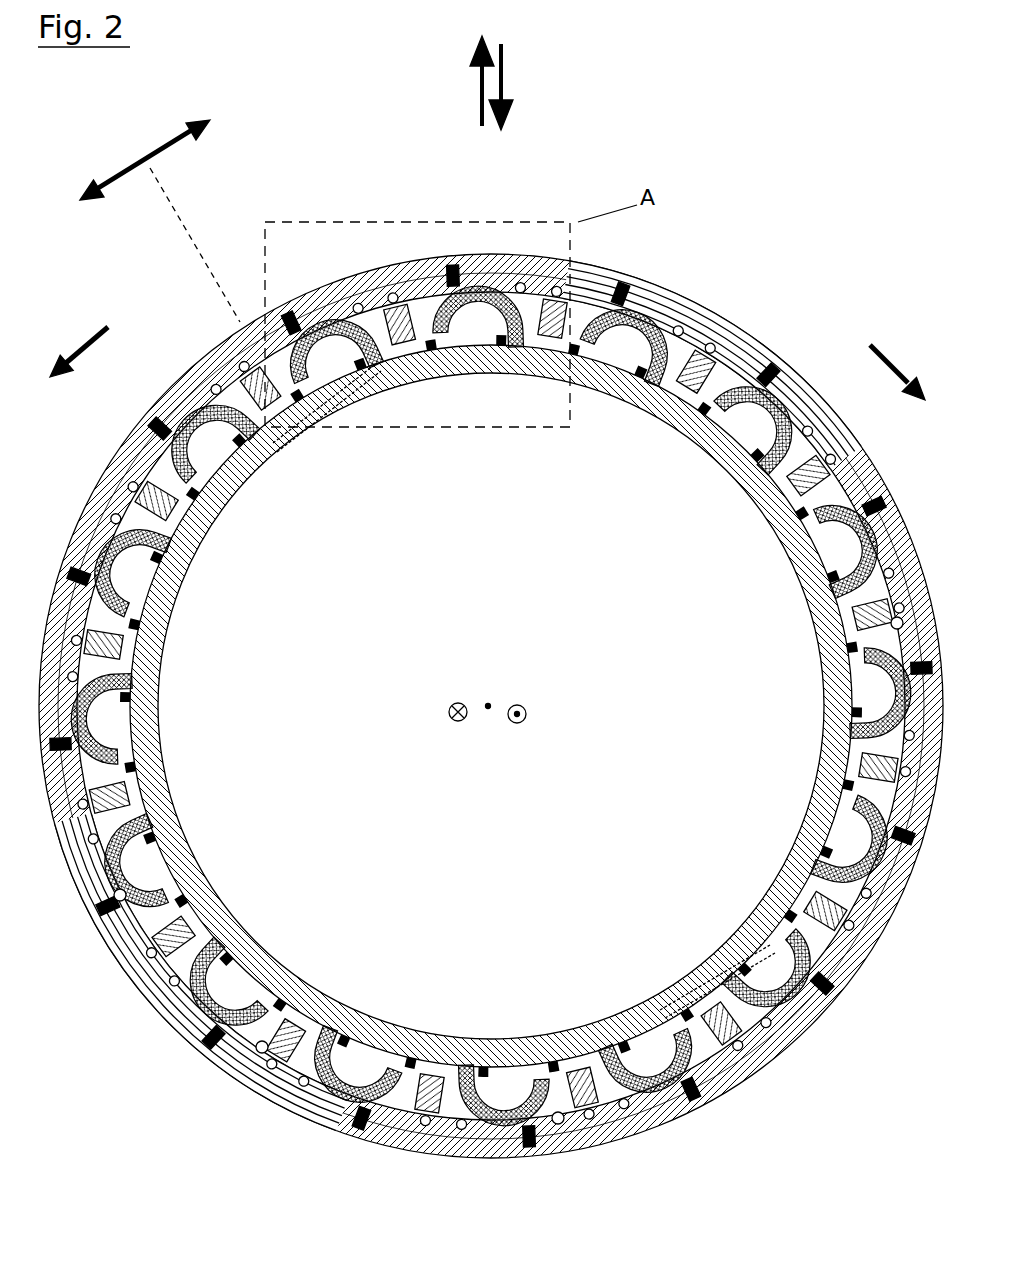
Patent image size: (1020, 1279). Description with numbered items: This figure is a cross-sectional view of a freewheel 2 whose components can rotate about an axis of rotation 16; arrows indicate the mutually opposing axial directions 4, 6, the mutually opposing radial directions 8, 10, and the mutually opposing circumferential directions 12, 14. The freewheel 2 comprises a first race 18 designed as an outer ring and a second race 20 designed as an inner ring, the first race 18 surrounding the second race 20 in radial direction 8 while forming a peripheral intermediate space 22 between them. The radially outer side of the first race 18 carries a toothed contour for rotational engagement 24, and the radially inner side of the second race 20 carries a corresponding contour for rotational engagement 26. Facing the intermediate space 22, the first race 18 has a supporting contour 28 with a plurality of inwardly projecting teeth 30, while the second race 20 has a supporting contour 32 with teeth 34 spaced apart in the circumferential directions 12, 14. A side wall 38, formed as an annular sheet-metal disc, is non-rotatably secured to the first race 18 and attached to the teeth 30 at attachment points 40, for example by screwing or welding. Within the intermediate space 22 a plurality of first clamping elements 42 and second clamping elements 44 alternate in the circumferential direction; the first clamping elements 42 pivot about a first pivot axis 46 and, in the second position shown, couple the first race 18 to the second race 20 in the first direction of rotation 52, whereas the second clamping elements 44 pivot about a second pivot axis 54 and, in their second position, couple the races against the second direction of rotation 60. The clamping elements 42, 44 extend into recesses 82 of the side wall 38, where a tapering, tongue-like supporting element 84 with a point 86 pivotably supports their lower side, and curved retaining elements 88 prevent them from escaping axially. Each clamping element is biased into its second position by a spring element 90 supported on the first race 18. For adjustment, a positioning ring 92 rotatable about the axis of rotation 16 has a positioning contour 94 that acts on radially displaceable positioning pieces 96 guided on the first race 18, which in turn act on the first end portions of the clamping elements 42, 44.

The freewheel 2 is at (798, 350).
The axial direction 4 is at (526, 716).
The axial direction 6 is at (452, 720).
The radial direction 8 is at (468, 78).
The radial direction 10 is at (505, 58).
The circumferential direction 12 is at (79, 328).
The circumferential direction 14 is at (897, 350).
The axis of rotation 16 is at (489, 712).
The first race 18 is at (243, 1047).
The second race 20 is at (290, 988).
The intermediate space 22 is at (182, 508).
The contour for rotational engagement 24 is at (343, 1133).
The contour for rotational engagement 26 is at (508, 1050).
The supporting contour 28 is at (287, 1070).
The teeth 30 is at (95, 832).
The supporting contour 32 is at (240, 965).
The teeth 34 is at (170, 975).
The side wall 38 is at (860, 790).
The attachment points 40 is at (410, 300).
The first clamping elements 42 is at (500, 300).
The second clamping elements 44 is at (325, 330).
The first pivot axis 46 is at (484, 330).
The first direction of rotation 52 is at (166, 128).
The second pivot axis 54 is at (333, 333).
The second direction of rotation 60 is at (138, 157).
The recess 82 is at (200, 500).
The supporting element 84 is at (226, 440).
The point 86 is at (484, 330).
The retaining element 88 is at (812, 430).
The spring element 90 is at (300, 333).
The positioning ring 92 is at (622, 262).
The positioning contour 94 is at (917, 697).
The positioning pieces 96 is at (357, 290).